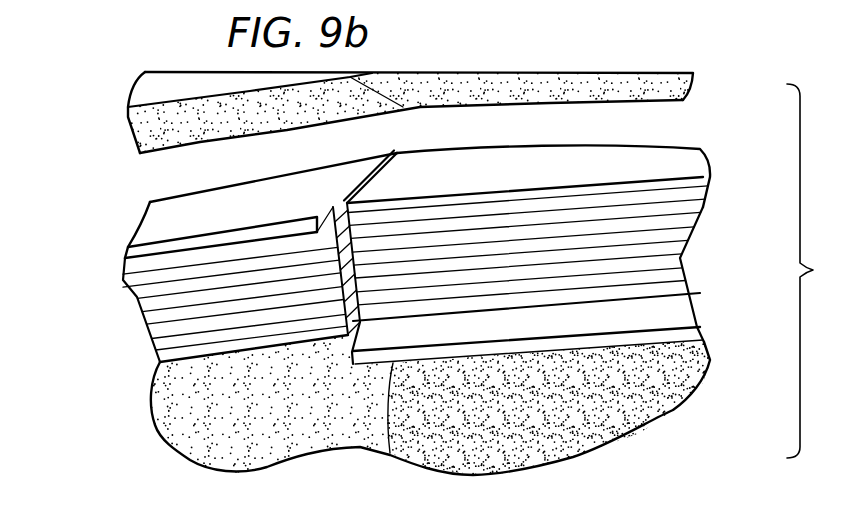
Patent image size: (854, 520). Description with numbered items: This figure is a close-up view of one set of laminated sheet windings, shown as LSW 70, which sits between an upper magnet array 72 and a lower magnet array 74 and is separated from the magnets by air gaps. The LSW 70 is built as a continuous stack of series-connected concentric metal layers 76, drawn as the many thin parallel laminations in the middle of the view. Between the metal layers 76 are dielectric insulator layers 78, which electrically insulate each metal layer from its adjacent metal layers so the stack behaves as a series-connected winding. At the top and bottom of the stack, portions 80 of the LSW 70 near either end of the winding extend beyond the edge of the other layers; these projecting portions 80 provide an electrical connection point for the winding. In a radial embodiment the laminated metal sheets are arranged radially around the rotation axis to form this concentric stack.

The LSW 70 is at (415, 264).
The magnet array 72 is at (130, 120).
The magnet array 74 is at (167, 416).
The concentric metal layers 76 is at (137, 297).
The dielectric insulator layers 78 is at (680, 258).
The portions of LSW 80 is at (137, 250).